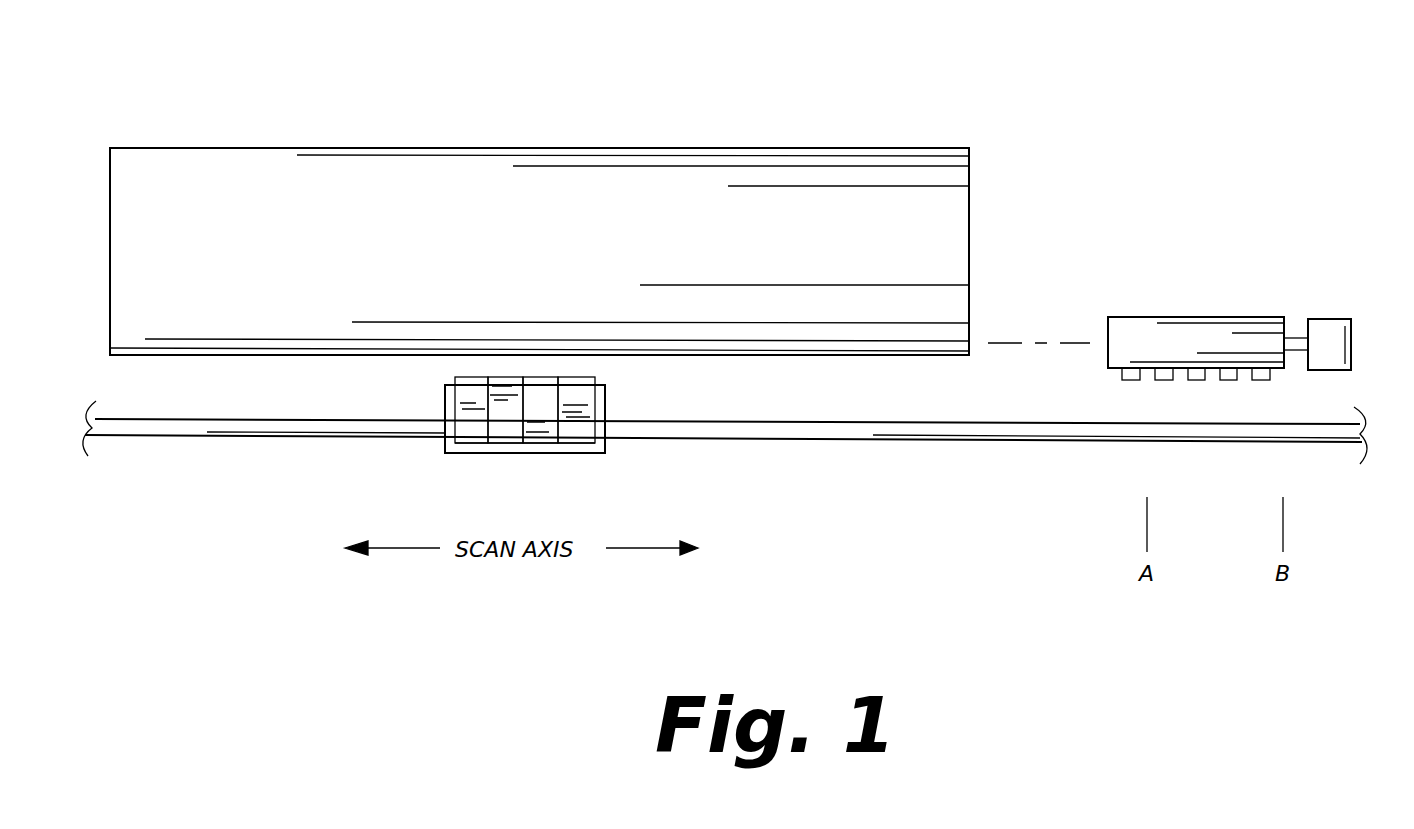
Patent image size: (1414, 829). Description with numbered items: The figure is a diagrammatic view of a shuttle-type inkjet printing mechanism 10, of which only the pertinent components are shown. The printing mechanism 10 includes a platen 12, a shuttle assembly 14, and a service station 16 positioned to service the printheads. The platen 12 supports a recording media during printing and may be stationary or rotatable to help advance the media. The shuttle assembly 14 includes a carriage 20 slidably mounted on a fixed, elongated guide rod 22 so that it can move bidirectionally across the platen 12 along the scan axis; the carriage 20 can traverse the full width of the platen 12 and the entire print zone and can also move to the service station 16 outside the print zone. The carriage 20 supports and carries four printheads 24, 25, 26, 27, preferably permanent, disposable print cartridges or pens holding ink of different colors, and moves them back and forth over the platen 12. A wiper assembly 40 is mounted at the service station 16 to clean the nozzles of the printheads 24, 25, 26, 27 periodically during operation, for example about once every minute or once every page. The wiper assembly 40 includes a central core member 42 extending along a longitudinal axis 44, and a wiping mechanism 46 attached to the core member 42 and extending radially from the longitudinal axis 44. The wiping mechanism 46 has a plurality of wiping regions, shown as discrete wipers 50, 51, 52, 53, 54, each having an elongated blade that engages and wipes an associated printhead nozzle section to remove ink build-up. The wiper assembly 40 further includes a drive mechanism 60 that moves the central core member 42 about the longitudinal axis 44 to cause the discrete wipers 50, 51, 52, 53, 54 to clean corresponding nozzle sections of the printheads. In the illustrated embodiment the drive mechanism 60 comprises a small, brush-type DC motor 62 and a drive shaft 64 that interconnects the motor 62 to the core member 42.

The printing mechanism 10 is at (1038, 57).
The platen 12 is at (394, 197).
The shuttle assembly 14 is at (343, 479).
The service station 16 is at (1200, 334).
The carriage 20 is at (537, 446).
The guide rod 22 is at (778, 432).
The printhead 24 is at (575, 431).
The printhead 25 is at (539, 416).
The printhead 26 is at (505, 425).
The printhead 27 is at (472, 433).
The wiper assembly 40 is at (1313, 339).
The central core member 42 is at (1140, 340).
The longitudinal axis 44 is at (1006, 342).
The wiping mechanism 46 is at (1098, 382).
The discrete wiper 50 is at (1128, 382).
The discrete wiper 51 is at (1163, 382).
The discrete wiper 52 is at (1196, 382).
The discrete wiper 53 is at (1229, 382).
The discrete wiper 54 is at (1264, 382).
The drive mechanism 60 is at (1323, 378).
The DC motor 62 is at (1325, 338).
The drive shaft 64 is at (1295, 337).